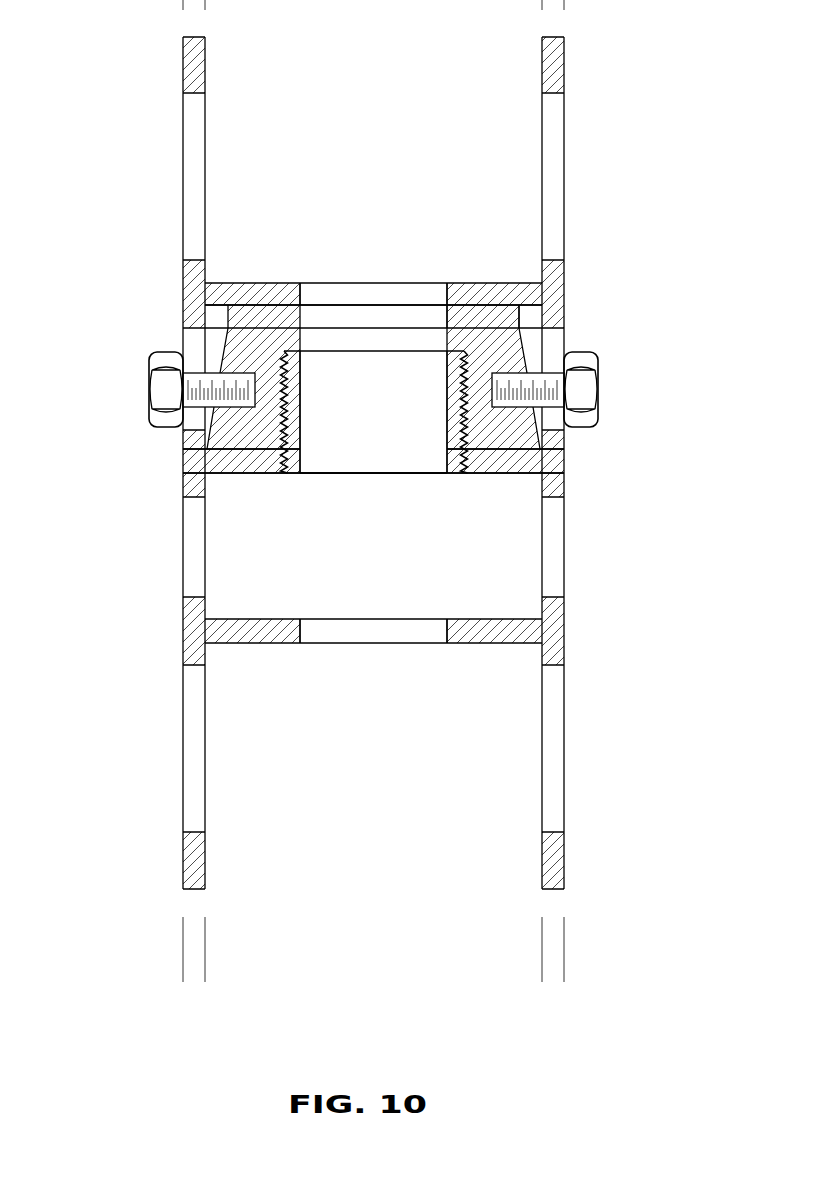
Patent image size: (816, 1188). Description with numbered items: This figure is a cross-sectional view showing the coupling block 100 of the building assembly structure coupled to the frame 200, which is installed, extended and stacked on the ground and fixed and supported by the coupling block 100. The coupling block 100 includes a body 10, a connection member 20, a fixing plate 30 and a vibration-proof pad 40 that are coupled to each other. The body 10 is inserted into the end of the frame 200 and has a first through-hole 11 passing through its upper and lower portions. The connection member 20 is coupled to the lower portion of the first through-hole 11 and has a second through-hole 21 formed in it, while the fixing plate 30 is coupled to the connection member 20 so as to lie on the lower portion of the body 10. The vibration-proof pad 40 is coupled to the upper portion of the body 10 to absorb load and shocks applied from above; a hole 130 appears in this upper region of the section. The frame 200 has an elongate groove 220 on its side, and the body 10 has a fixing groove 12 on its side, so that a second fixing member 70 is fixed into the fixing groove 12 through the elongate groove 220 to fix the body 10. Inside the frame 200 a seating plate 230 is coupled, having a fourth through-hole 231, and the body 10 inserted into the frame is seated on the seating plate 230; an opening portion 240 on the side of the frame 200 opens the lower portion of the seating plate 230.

The body 10 is at (507, 352).
The first through-hole 11 is at (362, 335).
The fixing groove 12 is at (245, 390).
The connection member 20 is at (292, 447).
The second through-hole 21 is at (398, 430).
The fixing plate 30 is at (502, 462).
The vibration-proof pad 40 is at (468, 312).
The second fixing member 70 is at (583, 388).
The coupling block 100 is at (178, 452).
The through hole 130 is at (291, 286).
The frame 200 is at (190, 278).
The elongate groove 220 is at (192, 340).
The seating plate 230 is at (500, 643).
The fourth through-hole 231 is at (365, 643).
The opening portion 240 is at (552, 180).